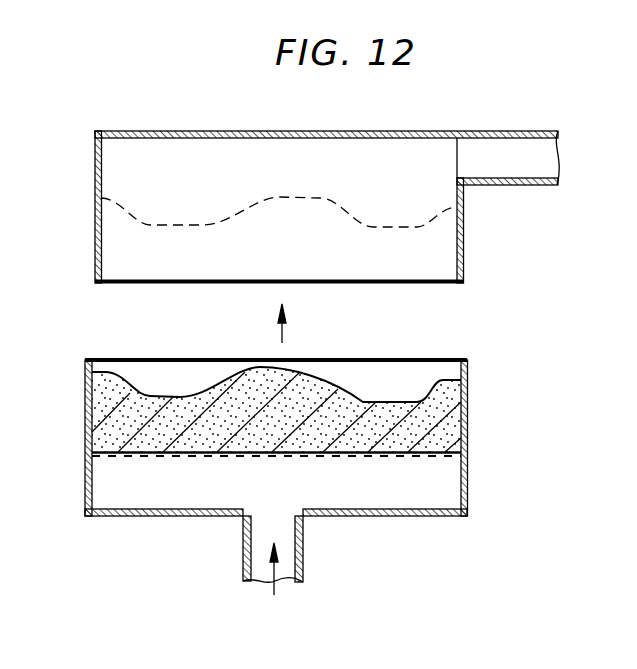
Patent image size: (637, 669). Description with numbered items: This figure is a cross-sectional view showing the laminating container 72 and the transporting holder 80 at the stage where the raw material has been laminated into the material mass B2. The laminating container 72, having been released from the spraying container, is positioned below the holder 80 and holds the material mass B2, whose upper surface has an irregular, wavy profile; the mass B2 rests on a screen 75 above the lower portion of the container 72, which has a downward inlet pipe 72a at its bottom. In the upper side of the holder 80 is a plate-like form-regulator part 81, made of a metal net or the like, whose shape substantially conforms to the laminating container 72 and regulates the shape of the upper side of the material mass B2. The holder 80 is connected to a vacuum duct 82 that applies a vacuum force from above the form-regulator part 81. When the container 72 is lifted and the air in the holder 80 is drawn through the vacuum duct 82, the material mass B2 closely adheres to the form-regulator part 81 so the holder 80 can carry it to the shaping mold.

The transporting holder 80 is at (96, 254).
The form-regulator part 81 is at (417, 226).
The vacuum duct 82 is at (527, 160).
The laminating container 72 is at (467, 494).
The inlet pipe 72a is at (288, 551).
The mesh screen 75 is at (162, 456).
The material mass B2 is at (467, 418).